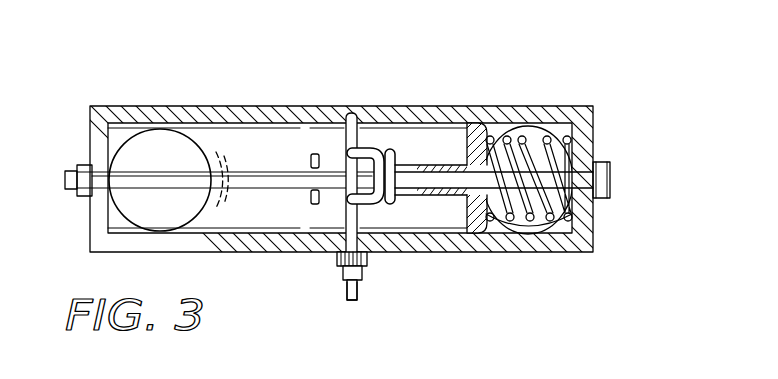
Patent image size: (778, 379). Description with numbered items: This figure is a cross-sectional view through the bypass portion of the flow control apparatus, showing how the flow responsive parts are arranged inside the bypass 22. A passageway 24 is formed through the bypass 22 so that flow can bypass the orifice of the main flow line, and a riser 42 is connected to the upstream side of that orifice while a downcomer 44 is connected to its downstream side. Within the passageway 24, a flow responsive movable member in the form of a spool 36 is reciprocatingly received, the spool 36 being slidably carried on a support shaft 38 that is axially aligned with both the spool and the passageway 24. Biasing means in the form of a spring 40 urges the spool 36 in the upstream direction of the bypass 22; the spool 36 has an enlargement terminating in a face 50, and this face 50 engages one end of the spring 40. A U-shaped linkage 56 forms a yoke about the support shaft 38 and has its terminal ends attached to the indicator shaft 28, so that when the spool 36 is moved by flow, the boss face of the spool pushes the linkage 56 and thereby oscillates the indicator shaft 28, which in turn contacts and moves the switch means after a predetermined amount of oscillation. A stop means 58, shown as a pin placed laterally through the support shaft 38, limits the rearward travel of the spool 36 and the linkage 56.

The bypass 22 is at (342, 97).
The passageway 24 is at (273, 120).
The indicator shaft 28 is at (358, 292).
The spool 36 is at (409, 150).
The support shaft 38 is at (246, 190).
The spring 40 is at (558, 221).
The riser 42 is at (170, 130).
The downcomer 44 is at (531, 127).
The face 50 is at (478, 124).
The U-shaped linkage 56 is at (369, 150).
The stop means 58 is at (311, 160).